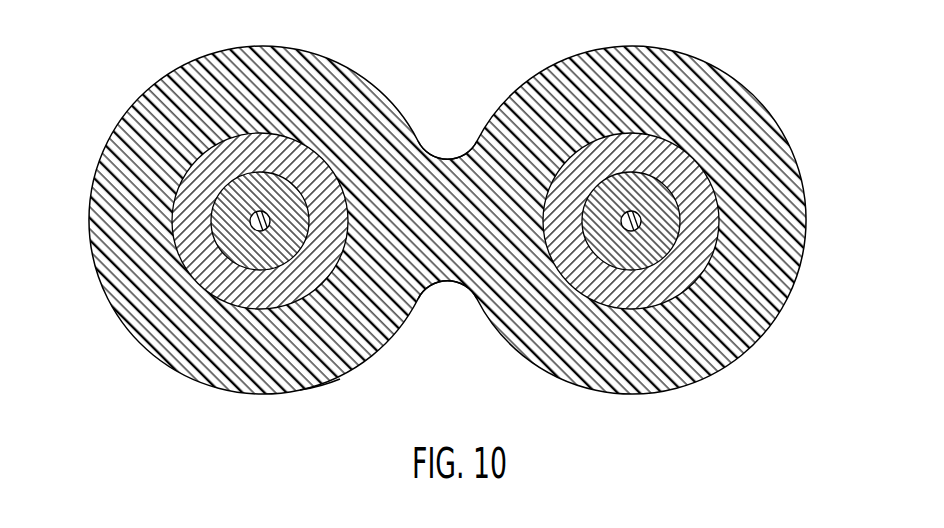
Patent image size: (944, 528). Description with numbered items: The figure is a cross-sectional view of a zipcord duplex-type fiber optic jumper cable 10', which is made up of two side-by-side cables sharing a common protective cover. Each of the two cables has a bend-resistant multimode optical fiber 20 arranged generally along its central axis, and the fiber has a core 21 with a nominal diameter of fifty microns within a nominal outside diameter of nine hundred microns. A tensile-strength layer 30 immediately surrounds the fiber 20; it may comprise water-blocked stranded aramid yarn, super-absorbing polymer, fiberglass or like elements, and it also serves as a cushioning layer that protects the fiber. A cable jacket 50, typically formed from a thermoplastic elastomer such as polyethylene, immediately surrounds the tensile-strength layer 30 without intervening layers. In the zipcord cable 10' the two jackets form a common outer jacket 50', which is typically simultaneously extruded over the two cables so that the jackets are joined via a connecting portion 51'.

The zipcord duplex-type fiber optic jumper cable 10' is at (447, 220).
The bend-resistant multimode optical fiber 20 is at (203, 252).
The core 21 is at (250, 222).
The tensile-strength layer 30 is at (170, 193).
The cable jacket 50 is at (448, 220).
The common outer jacket 50' is at (313, 415).
The connecting portion 51' is at (447, 256).